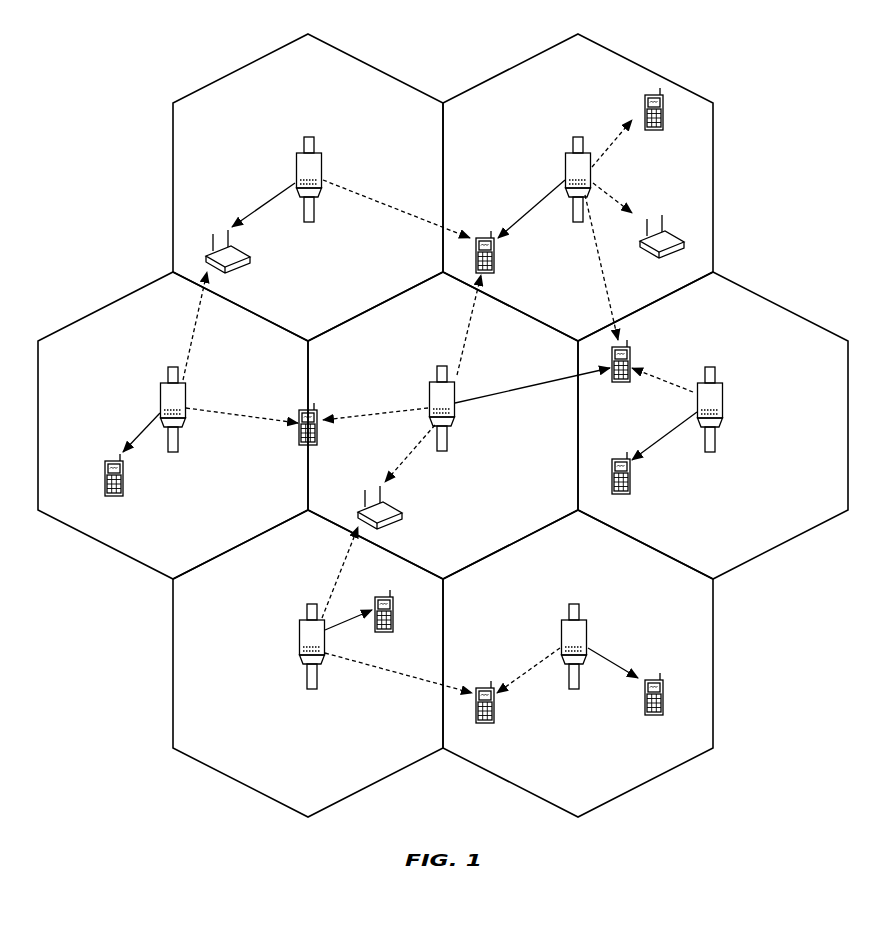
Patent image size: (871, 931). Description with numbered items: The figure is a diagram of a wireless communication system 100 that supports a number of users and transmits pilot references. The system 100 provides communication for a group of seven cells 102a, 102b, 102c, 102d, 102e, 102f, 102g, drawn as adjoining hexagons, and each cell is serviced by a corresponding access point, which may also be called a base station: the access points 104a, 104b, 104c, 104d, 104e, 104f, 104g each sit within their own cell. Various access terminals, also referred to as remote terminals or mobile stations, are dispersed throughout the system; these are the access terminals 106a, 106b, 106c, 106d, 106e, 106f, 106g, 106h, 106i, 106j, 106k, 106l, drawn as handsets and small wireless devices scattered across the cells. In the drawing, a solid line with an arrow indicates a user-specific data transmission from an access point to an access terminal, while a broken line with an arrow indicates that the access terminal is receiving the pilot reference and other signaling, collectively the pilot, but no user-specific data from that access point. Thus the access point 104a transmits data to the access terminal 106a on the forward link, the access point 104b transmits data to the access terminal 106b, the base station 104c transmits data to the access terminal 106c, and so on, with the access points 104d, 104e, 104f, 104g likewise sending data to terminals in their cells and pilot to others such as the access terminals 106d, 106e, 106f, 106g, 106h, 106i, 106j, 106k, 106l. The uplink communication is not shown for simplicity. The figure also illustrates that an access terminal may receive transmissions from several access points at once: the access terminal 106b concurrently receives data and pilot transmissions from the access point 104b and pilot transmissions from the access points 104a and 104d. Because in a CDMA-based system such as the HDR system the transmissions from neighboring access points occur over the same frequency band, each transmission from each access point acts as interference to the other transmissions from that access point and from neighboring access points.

The wireless communication system 100 is at (797, 66).
The cell 102a is at (242, 68).
The cell 102b is at (658, 52).
The cell 102c is at (105, 307).
The cell 102d is at (465, 311).
The cell 102e is at (795, 290).
The cell 102f is at (172, 668).
The cell 102g is at (717, 670).
The access point 104a is at (295, 157).
The access point 104b is at (563, 157).
The access point 104c is at (158, 393).
The access point 104d is at (428, 387).
The access point 104e is at (725, 388).
The access point 104f is at (298, 627).
The access point 104g is at (560, 625).
The access terminal 106a is at (250, 250).
The access terminal 106b is at (480, 237).
The access terminal 106c is at (105, 473).
The access terminal 106d is at (298, 412).
The access terminal 106e is at (632, 352).
The access terminal 106f is at (380, 596).
The access terminal 106g is at (480, 687).
The access terminal 106h is at (693, 220).
The access terminal 106i is at (645, 98).
The access terminal 106j is at (398, 505).
The access terminal 106k is at (612, 458).
The access terminal 106l is at (652, 678).